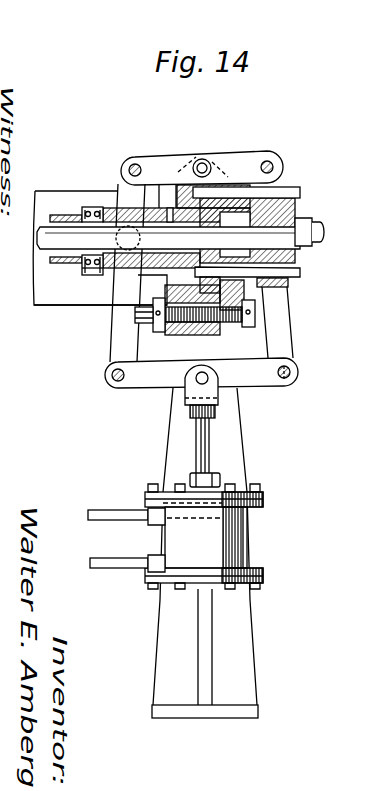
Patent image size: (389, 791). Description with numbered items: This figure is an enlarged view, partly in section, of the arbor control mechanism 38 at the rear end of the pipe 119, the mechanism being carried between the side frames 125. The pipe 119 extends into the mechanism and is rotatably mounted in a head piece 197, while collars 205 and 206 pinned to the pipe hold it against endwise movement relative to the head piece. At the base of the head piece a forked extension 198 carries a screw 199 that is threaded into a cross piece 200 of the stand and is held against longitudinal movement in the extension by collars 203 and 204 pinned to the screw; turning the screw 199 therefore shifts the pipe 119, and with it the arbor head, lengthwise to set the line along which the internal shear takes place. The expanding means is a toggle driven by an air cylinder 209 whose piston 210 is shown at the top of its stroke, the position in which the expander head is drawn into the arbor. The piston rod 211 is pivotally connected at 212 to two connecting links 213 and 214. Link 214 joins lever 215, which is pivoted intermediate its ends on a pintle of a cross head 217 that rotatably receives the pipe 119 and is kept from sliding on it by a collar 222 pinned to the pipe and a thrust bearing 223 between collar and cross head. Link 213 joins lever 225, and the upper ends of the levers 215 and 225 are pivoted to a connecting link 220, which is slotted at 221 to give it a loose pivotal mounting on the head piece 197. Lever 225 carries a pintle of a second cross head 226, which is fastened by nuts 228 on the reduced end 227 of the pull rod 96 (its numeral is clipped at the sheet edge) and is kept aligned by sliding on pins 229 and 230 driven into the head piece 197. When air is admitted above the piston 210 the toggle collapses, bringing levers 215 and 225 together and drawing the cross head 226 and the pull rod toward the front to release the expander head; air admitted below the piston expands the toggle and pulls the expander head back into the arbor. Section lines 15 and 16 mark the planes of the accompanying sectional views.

The section line 15- 15 is at (278, 120).
The section line 16- 16 is at (116, 412).
The arbor control mechanism 38 is at (294, 164).
The cap 96 is at (42, 235).
The pipe 119 is at (54, 218).
The side frames 125 is at (80, 306).
The head piece 197 is at (176, 186).
The forked extension 198 is at (263, 292).
The screw 199 is at (233, 321).
The cross piece 200 is at (267, 347).
The collar 203 is at (157, 332).
The collar 204 is at (262, 303).
The collar 205 is at (171, 186).
The collar 206 is at (235, 188).
The air cylinder 209 is at (248, 547).
The piston 210 is at (243, 512).
The piston rod 211 is at (203, 452).
The pivotal connection 212 is at (218, 397).
The connecting link 213 is at (258, 385).
The connecting link 214 is at (153, 390).
The lever 215 is at (113, 338).
The cross head 217 is at (106, 274).
The connecting link 220 is at (190, 160).
The slot 221 is at (207, 160).
The collar 222 is at (90, 210).
The thrust bearing 223 is at (103, 270).
The lever 225 is at (288, 318).
The cross head 226 is at (290, 196).
The reduced end 227 is at (295, 223).
The nuts 228 is at (313, 233).
The pin 229 is at (298, 190).
The pin 230 is at (297, 272).